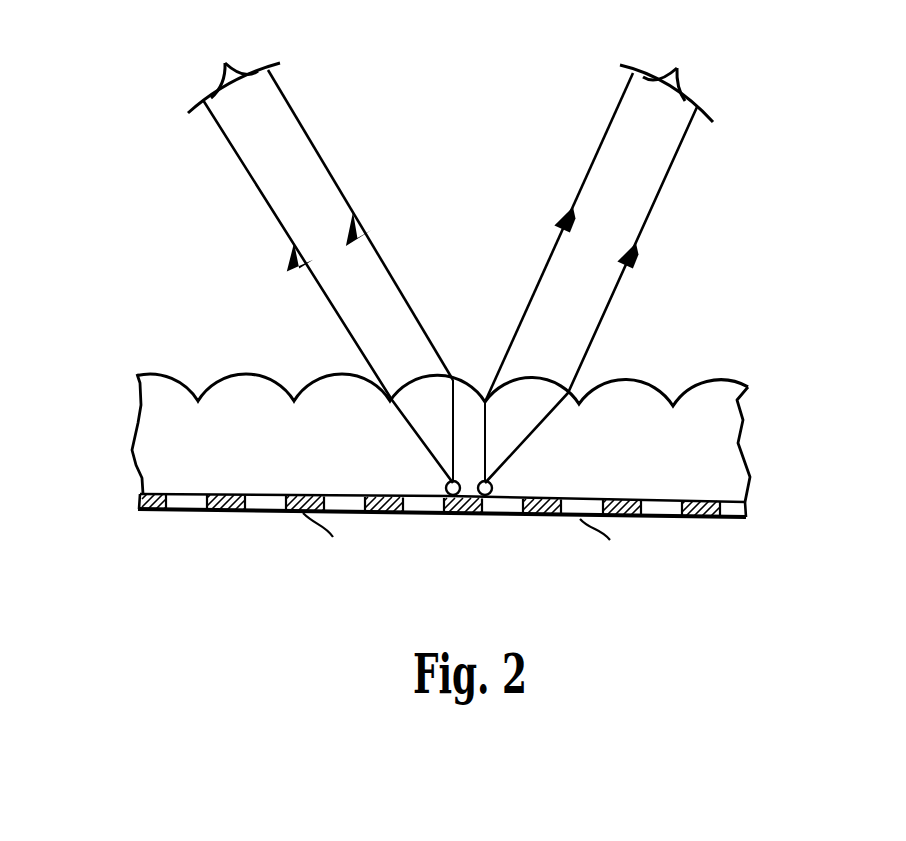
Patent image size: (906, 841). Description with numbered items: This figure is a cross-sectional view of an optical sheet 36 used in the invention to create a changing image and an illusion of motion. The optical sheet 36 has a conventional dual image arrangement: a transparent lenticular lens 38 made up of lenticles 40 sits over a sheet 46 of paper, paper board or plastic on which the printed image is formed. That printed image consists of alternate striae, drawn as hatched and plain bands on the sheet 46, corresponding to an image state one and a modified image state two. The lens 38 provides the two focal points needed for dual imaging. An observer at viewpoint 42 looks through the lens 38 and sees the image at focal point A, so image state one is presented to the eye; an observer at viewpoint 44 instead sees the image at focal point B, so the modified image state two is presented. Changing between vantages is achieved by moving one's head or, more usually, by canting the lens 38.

The optical sheet 36 is at (97, 439).
The lenticular lens 38 is at (720, 436).
The lenticles 40 is at (637, 382).
The viewpoint 42 is at (208, 102).
The viewpoint 44 is at (697, 107).
The sheet 46 is at (743, 507).
The focal point A is at (447, 485).
The focal point B is at (493, 487).